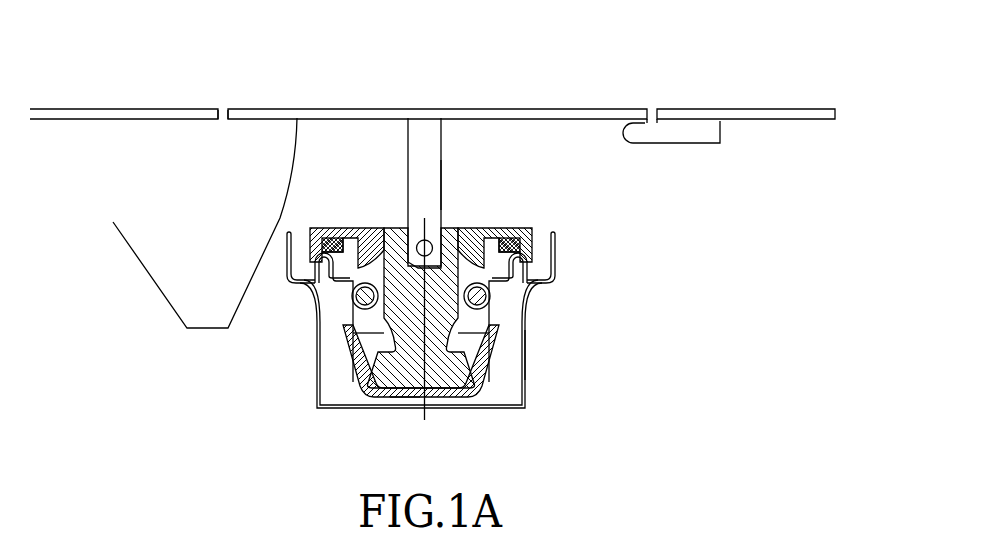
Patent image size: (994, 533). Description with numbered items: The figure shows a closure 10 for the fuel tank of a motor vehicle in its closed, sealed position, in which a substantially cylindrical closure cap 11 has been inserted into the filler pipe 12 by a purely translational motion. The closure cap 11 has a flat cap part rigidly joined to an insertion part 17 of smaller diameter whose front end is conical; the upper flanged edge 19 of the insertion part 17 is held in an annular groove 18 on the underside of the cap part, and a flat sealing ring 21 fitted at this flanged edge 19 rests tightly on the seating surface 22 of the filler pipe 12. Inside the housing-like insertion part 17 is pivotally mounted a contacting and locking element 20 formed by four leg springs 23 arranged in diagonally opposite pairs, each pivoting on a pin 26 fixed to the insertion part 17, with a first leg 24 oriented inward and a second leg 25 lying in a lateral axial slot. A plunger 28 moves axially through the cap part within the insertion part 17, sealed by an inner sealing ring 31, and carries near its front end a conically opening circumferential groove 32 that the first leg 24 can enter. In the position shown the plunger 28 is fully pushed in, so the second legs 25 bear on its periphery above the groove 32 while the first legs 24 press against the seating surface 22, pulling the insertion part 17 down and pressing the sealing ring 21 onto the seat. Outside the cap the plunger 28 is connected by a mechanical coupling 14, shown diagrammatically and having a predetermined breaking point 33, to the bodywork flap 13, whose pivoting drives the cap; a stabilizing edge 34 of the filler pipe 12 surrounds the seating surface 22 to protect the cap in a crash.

The closure 10 is at (636, 60).
The closure cap 11 is at (318, 214).
The filler pipe 12 is at (562, 404).
The flap 13 is at (234, 119).
The mechanical coupling 14 is at (408, 143).
The insertion part 17 is at (345, 395).
The annular groove 18 is at (334, 238).
The flanged edge 19 is at (533, 242).
The contacting and locking element 20 is at (390, 336).
The flat sealing ring 21 is at (512, 250).
The seating surface 22 is at (527, 272).
The leg spring 23 is at (356, 322).
The first leg 24 is at (528, 325).
The second leg 25 is at (492, 302).
The pin 26 is at (350, 297).
The plunger 28 is at (446, 380).
The inner sealing ring 31 is at (478, 228).
The circumferential groove 32 is at (404, 390).
The predetermined breaking point 33 is at (443, 192).
The stabilizing edge 34 is at (552, 234).